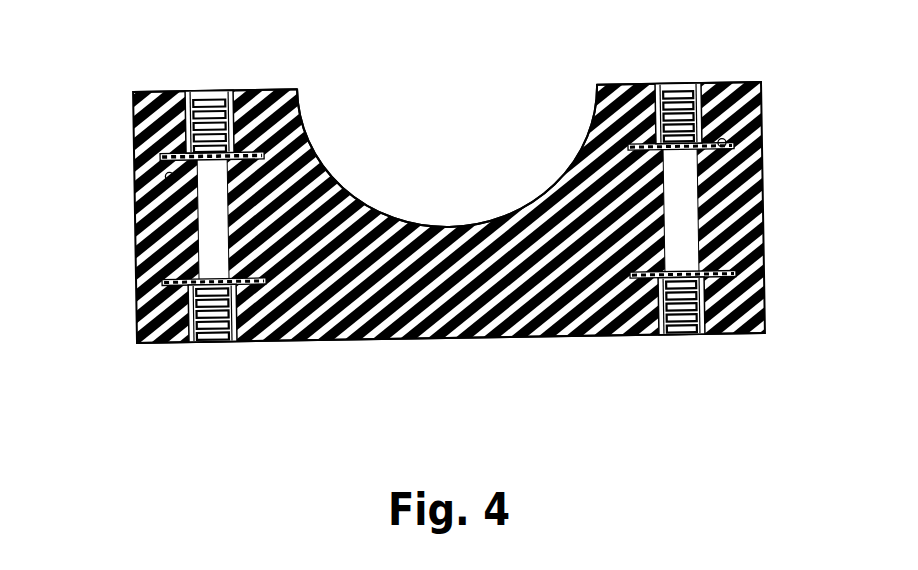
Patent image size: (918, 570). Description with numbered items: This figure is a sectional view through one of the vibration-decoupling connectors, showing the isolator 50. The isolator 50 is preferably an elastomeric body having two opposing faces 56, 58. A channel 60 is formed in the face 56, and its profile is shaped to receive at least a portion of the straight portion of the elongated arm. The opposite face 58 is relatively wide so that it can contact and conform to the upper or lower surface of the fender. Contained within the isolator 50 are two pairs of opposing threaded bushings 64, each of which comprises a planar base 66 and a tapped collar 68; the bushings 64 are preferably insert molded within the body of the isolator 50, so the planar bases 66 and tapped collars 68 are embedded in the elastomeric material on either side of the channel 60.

The isolator 50 is at (395, 352).
The face 56 is at (263, 92).
The face 58 is at (601, 334).
The channel 60 is at (450, 187).
The threaded bushing 64 is at (233, 88).
The planar base 66 is at (165, 171).
The tapped collar 68 is at (172, 93).